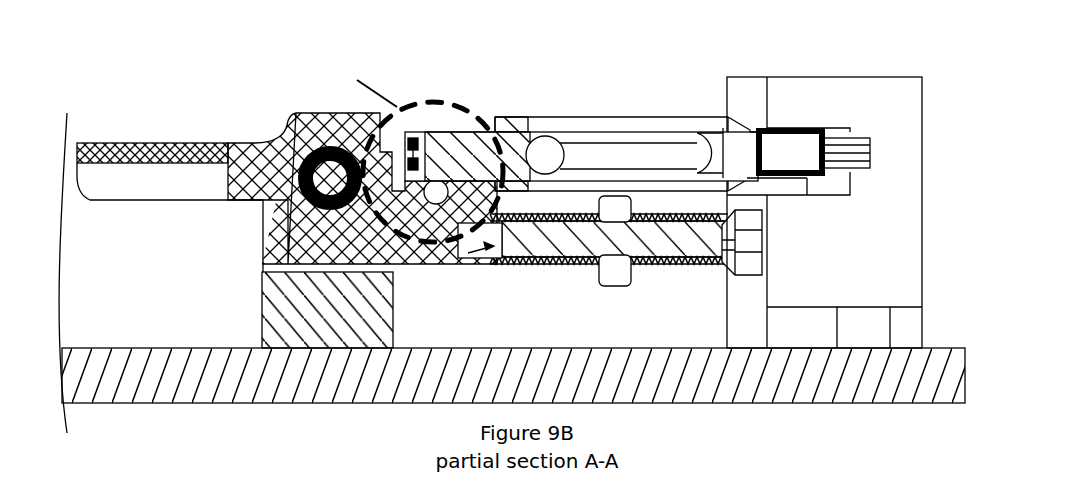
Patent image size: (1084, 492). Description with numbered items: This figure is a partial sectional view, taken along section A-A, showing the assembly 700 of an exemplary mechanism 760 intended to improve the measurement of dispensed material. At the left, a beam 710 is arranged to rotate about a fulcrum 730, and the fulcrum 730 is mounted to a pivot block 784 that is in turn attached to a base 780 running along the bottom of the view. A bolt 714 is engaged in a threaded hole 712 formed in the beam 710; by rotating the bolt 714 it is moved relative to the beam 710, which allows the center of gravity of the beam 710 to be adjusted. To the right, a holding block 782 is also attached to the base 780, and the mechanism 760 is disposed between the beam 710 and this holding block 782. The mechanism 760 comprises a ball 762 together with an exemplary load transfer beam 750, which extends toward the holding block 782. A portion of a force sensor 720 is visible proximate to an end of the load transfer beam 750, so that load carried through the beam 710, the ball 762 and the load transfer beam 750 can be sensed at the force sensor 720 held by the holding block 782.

The coupling assembly 700 is at (444, 51).
The beam 710 is at (158, 158).
The threaded hole 712 is at (450, 266).
The bolt 714 is at (666, 245).
The force sensor 720 is at (785, 157).
The fulcrum 730 is at (327, 180).
The load transfer beam 750 is at (623, 117).
The mechanism 760 is at (548, 81).
The ball 762 is at (435, 204).
The base 780 is at (128, 367).
The holding block 782 is at (868, 100).
The pivot block 784 is at (280, 308).